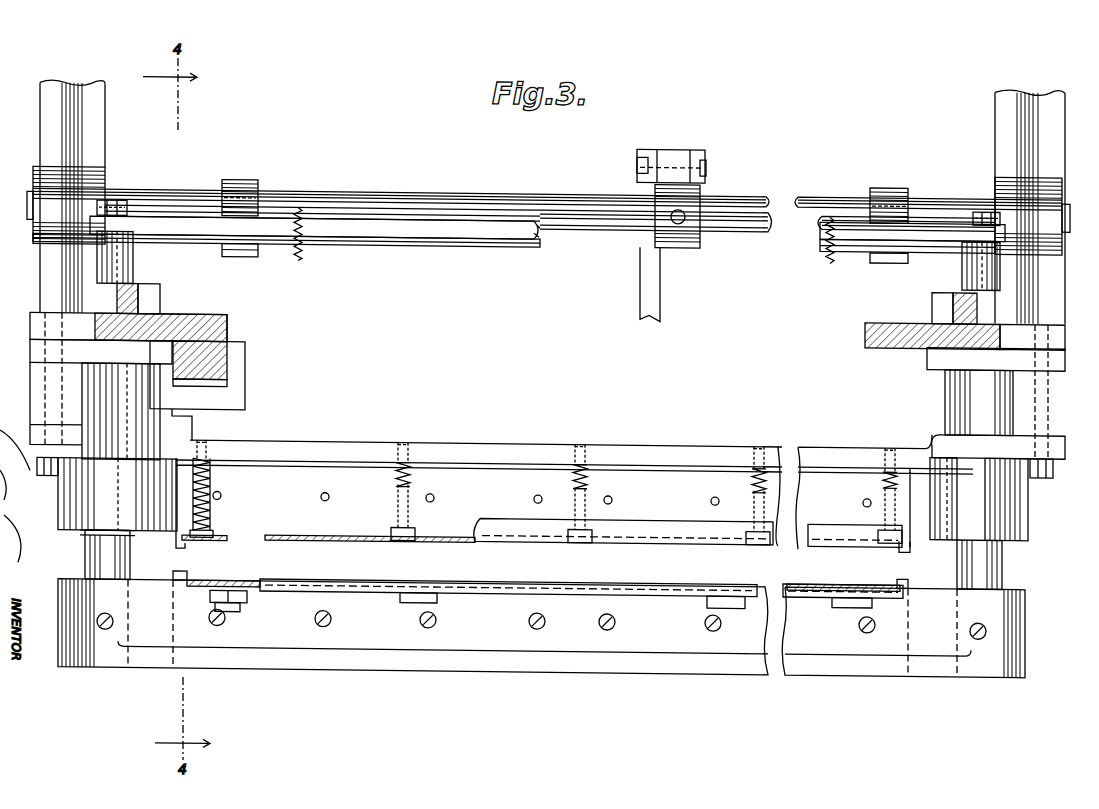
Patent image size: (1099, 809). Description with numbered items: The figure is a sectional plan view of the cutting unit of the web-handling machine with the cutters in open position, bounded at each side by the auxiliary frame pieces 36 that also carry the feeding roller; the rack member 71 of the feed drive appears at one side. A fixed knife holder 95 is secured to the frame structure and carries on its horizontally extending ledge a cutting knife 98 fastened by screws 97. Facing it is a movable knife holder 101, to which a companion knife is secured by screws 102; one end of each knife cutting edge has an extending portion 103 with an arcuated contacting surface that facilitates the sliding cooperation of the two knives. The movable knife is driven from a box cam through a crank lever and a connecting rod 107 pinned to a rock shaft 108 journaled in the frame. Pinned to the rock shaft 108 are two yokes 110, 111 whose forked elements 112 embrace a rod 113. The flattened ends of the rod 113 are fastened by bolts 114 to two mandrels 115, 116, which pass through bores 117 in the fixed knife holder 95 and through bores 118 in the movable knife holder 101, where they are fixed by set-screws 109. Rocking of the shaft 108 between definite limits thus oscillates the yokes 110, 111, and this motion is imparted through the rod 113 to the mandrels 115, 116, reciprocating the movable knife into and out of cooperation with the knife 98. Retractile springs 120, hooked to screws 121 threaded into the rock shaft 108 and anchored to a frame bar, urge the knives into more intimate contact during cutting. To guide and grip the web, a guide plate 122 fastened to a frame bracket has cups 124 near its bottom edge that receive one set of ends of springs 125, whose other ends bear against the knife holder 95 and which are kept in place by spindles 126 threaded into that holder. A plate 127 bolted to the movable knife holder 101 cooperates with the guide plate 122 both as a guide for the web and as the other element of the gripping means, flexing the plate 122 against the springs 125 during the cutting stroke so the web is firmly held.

The auxiliary frame pieces 36 is at (46, 265).
The rack member 71 is at (229, 362).
The knife holder 95 is at (478, 443).
The screws 97 is at (325, 497).
The cutting knife 98 is at (574, 496).
The movable knife holder 101 is at (502, 667).
The screws 102 is at (598, 619).
The extending portions 103 is at (183, 546).
The connecting rod 107 is at (660, 292).
The rock shaft 108 is at (470, 189).
The set-screws 109 is at (114, 621).
The yoke 110 is at (249, 179).
The yoke 111 is at (884, 180).
The forked elements 112 is at (247, 252).
The rod 113 is at (485, 240).
The bolts 114 is at (126, 196).
The mandrel 115 is at (86, 554).
The mandrel 116 is at (998, 563).
The bores 117 is at (68, 490).
The bores 118 is at (80, 628).
The retractile springs 120 is at (300, 254).
The screws 121 is at (298, 204).
The guide plate 122 is at (660, 526).
The cups 124 is at (213, 529).
The springs 125 is at (211, 484).
The spindles 126 is at (572, 478).
The plate 127 is at (626, 581).